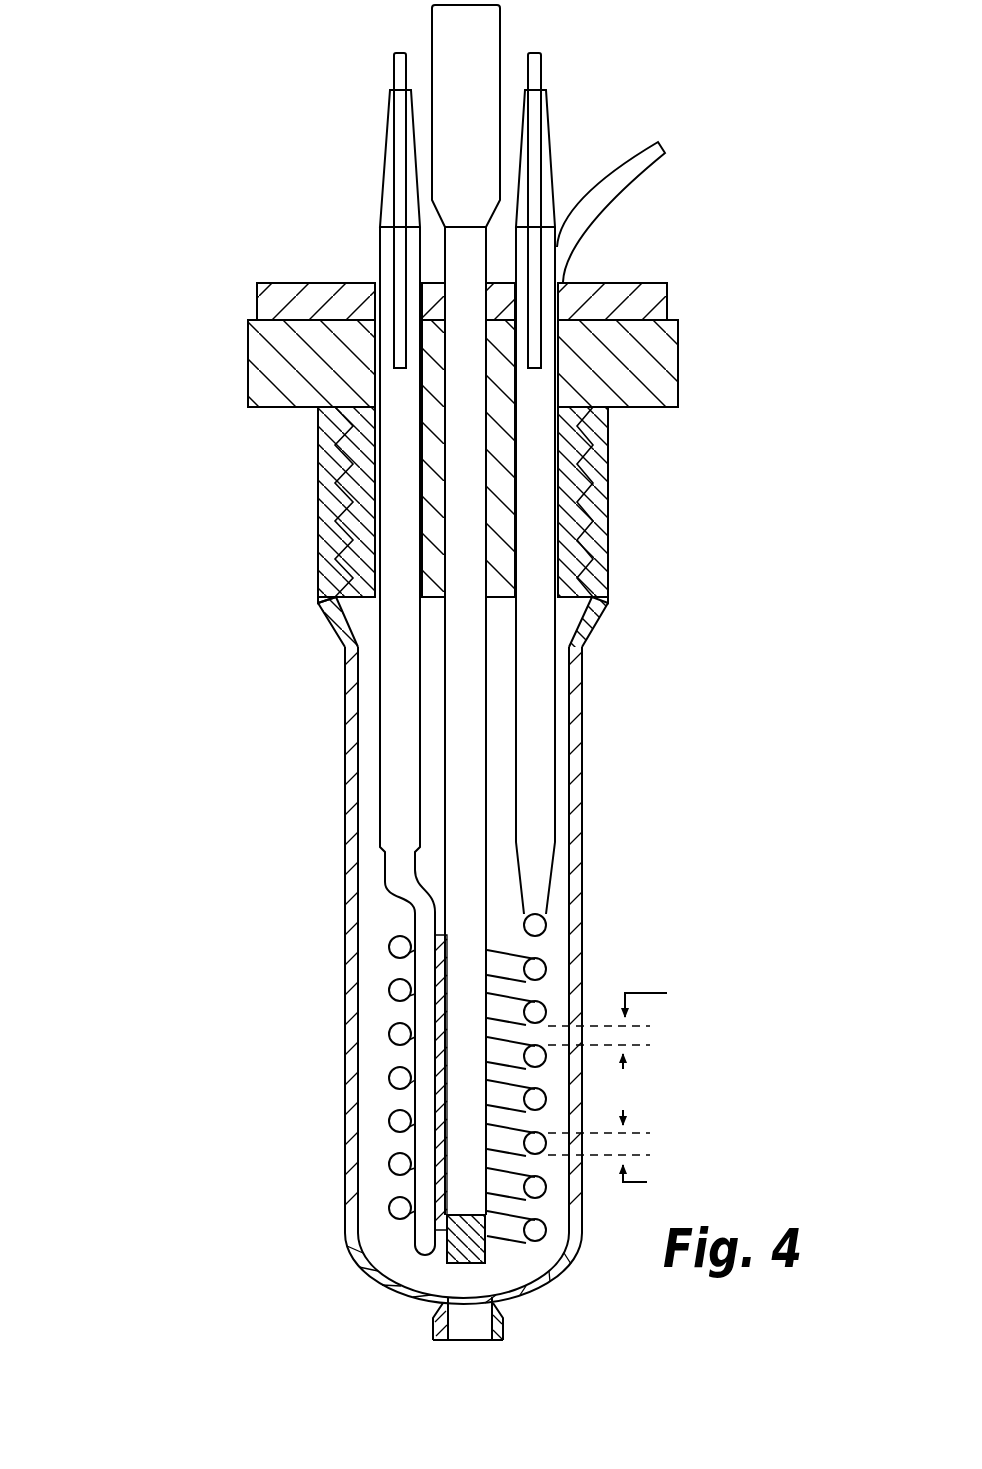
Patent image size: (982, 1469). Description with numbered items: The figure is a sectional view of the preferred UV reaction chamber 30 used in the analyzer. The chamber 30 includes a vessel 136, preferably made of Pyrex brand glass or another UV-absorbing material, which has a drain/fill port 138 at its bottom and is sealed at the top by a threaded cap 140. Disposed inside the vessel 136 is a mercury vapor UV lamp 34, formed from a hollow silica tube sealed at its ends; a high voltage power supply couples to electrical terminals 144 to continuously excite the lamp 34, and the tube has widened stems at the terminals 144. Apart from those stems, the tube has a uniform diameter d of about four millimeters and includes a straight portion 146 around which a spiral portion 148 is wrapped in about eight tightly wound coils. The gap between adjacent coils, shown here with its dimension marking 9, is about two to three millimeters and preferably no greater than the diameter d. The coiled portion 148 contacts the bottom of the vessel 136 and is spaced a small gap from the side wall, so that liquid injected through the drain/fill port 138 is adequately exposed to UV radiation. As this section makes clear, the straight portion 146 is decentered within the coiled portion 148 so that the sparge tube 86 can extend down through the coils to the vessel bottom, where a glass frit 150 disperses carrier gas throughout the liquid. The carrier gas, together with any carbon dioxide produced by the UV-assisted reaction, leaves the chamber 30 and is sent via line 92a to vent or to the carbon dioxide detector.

The UV reaction chamber 30 is at (190, 517).
The mercury vapor UV lamp 34 is at (380, 1158).
The sparge tube 86 is at (462, 682).
The line 92a is at (598, 198).
The vessel 136 is at (340, 812).
The drain/fill port 138 is at (505, 1316).
The threaded cap 140 is at (638, 358).
The electrical terminals 144 is at (541, 66).
The straight portion 146 is at (425, 993).
The spiral portion 148 is at (507, 963).
The glass frit 150 is at (460, 1255).
The dimension 9 is at (618, 1026).
The diameter d is at (611, 1153).